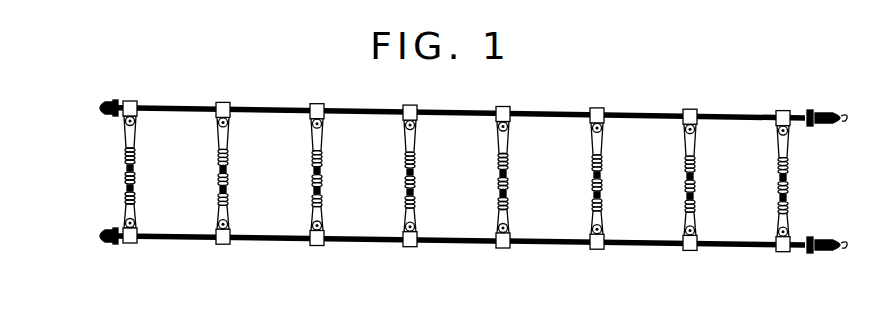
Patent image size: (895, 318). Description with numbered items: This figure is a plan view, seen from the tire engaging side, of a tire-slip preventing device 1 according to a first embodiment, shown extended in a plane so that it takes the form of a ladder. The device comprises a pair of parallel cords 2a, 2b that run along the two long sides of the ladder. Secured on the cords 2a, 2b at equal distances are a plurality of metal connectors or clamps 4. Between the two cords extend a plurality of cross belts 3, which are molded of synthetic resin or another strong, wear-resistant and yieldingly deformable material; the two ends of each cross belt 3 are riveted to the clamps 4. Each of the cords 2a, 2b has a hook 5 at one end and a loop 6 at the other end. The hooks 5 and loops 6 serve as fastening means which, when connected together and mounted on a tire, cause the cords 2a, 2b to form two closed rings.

The tire-slip preventing device 1 is at (469, 178).
The cord 2a is at (458, 245).
The cord 2b is at (437, 108).
The cross belt 3 is at (598, 186).
The clamp 4 is at (314, 106).
The hook 5 is at (846, 116).
The loop 6 is at (99, 107).